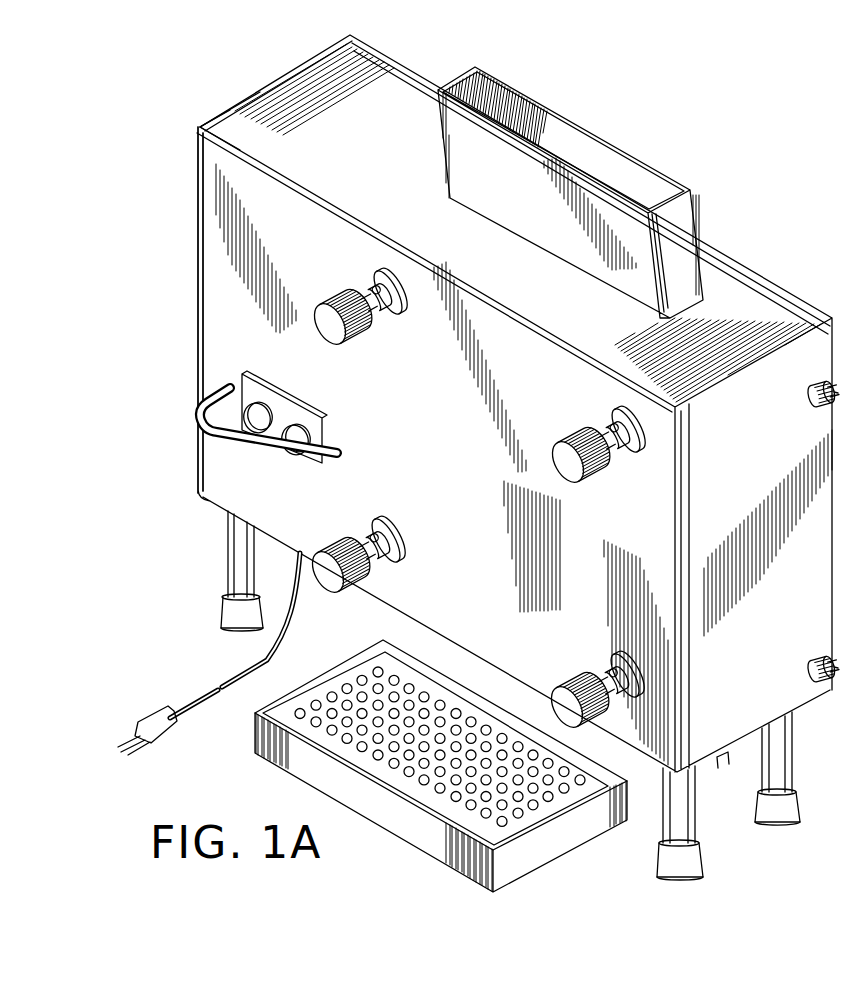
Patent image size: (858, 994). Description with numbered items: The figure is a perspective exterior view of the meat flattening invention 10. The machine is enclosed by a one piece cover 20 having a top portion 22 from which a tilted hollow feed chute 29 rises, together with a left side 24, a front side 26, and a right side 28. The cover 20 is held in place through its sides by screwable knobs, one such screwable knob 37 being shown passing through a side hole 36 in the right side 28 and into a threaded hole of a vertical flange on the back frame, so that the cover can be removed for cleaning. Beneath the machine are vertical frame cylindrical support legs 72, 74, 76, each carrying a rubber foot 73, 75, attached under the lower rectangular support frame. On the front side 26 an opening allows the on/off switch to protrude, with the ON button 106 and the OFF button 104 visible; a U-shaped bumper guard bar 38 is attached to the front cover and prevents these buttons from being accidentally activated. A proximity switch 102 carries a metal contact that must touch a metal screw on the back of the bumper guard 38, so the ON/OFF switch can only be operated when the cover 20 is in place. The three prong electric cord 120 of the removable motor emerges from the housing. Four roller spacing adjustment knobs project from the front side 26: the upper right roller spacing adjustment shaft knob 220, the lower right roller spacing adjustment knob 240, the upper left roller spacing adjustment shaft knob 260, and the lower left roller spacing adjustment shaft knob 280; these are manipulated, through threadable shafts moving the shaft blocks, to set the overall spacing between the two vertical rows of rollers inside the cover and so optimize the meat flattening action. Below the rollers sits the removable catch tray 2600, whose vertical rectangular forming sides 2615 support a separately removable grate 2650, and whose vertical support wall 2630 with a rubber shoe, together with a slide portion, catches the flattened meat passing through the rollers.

The meat flattening invention 10 is at (514, 403).
The one piece cover 20 is at (225, 121).
The top portion 22 is at (318, 62).
The left side 24 is at (197, 282).
The front side 26 is at (228, 343).
The right side 28 is at (776, 502).
The tilted hollow feed chute 29 is at (575, 140).
The side hole 36 is at (815, 386).
The screwable knob 37 is at (828, 398).
The U-shaped bumper guard bar 38 is at (263, 470).
The vertical frame cylindrical support leg 72 is at (240, 562).
The rubber foot 73 is at (232, 613).
The vertical frame cylindrical support leg 74 is at (681, 822).
The rubber foot 75 is at (667, 863).
The vertical frame cylindrical support leg 76 is at (791, 738).
The switch 102 is at (277, 402).
The OFF button 104 is at (250, 424).
The ON button 106 is at (305, 438).
The three prong electric cord 120 is at (181, 654).
The upper right roller spacing adjustment shaft knob 220 is at (566, 456).
The lower right roller spacing adjustment knob 240 is at (578, 696).
The upper left roller spacing adjustment shaft knob 260 is at (330, 322).
The lower left roller spacing adjustment shaft knob 280 is at (393, 557).
The removable catch tray 2600 is at (481, 676).
The vertical rectangular forming sides 2615 is at (398, 820).
The vertical support wall 2630 is at (722, 760).
The removable grate 2650 is at (350, 748).